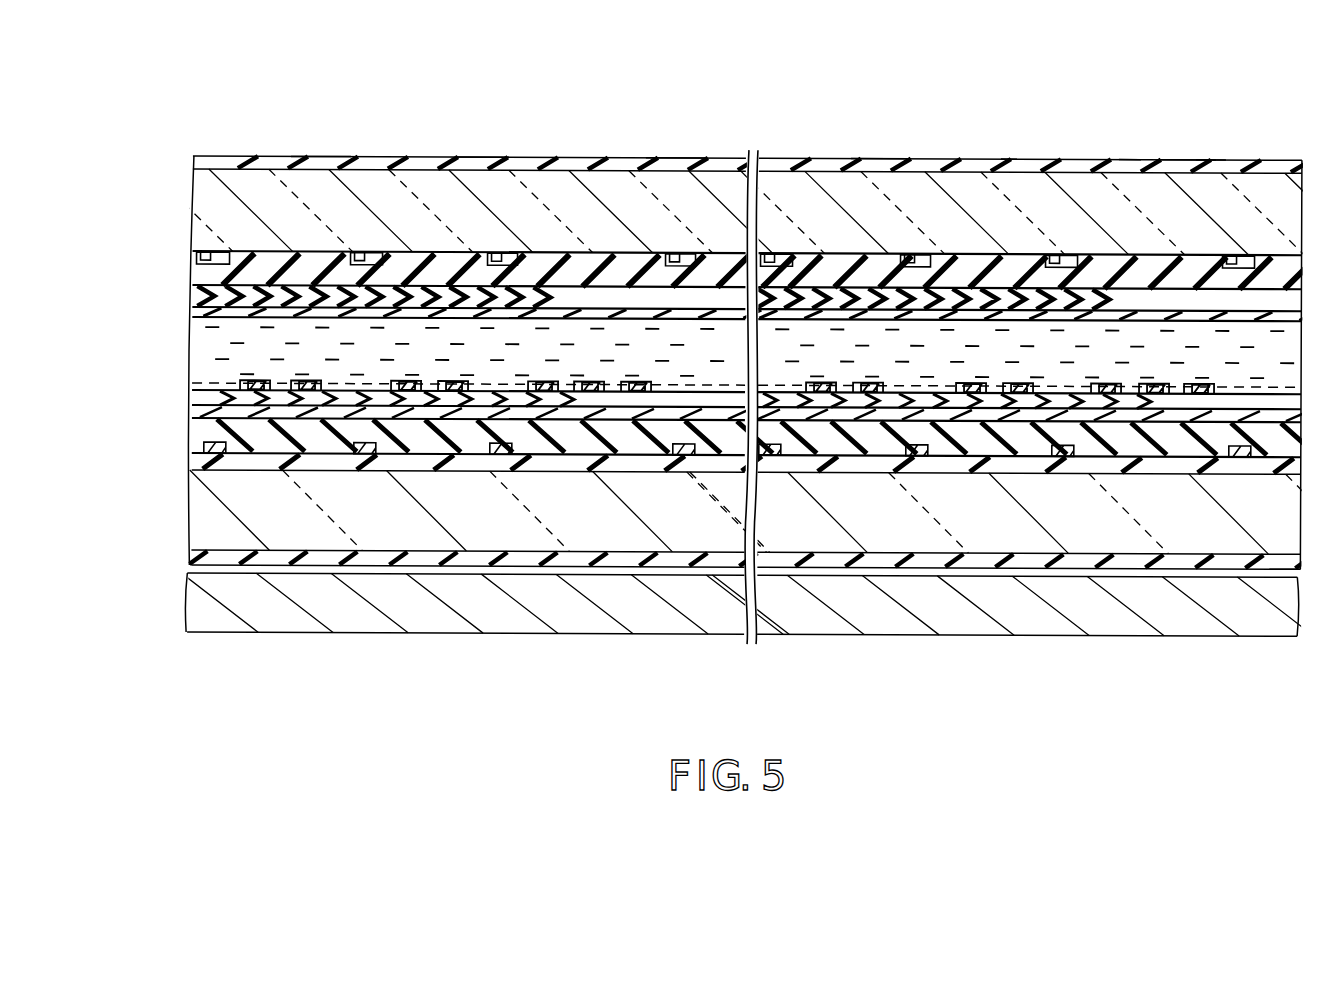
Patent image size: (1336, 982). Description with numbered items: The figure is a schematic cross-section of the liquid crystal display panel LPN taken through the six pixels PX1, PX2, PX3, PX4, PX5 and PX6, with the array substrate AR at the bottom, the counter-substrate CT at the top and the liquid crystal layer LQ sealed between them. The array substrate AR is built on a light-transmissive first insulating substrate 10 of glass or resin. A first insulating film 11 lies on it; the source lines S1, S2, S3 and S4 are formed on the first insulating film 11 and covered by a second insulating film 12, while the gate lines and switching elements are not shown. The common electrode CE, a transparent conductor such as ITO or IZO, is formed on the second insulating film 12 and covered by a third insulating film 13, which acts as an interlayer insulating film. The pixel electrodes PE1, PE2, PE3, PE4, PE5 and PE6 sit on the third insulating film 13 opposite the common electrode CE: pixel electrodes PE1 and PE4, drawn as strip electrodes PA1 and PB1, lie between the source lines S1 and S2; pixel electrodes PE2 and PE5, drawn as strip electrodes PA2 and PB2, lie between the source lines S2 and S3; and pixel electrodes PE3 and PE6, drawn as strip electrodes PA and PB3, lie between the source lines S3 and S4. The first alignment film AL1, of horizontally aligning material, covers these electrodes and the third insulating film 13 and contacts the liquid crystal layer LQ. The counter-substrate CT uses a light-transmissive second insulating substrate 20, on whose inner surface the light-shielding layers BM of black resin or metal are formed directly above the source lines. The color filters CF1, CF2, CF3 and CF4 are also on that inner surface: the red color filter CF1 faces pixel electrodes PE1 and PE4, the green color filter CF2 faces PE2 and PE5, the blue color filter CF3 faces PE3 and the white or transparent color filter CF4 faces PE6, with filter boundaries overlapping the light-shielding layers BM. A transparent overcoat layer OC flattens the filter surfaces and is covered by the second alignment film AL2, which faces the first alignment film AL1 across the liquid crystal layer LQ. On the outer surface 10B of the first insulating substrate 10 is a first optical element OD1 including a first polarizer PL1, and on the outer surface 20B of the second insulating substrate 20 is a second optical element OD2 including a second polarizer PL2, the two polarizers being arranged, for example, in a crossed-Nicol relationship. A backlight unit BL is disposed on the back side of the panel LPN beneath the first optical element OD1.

The pixel PX1 is at (320, 157).
The pixel PX2 is at (483, 157).
The pixel PX3 is at (676, 157).
The pixel PX4 is at (880, 157).
The pixel PX5 is at (1030, 157).
The pixel PX6 is at (1187, 157).
The outer surface of second insulating substrate 20B is at (1128, 157).
The liquid crystal display panel LPN is at (1210, 153).
The light-shielding layer BM is at (214, 252).
The color filter CF1 is at (262, 262).
The color filter CF2 is at (424, 262).
The color filter CF3 is at (610, 262).
The color filter CF4 is at (1150, 262).
The second optical element OD2 is at (689, 159).
The second polarizer PL2 is at (774, 164).
The second insulating substrate 20 is at (192, 200).
The counter-substrate CT is at (701, 214).
The overcoat layer OC is at (192, 296).
The second alignment film AL2 is at (192, 312).
The liquid crystal layer LQ is at (192, 346).
The first alignment film AL1 is at (192, 388).
The third insulating film 13 is at (192, 398).
The common electrode CE is at (192, 412).
The second insulating film 12 is at (192, 436).
The first insulating film 11 is at (192, 462).
The array substrate AR is at (702, 535).
The first insulating substrate 10 is at (192, 520).
The outer surface of first insulating substrate 10B is at (1282, 558).
The first optical element OD1 is at (690, 556).
The first polarizer PL1 is at (192, 558).
The backlight unit BL is at (192, 606).
The source line S1 is at (215, 455).
The source line S2 is at (365, 455).
The source line S3 is at (501, 455).
The source line S4 is at (684, 455).
The strip electrode PA1 is at (280, 546).
The pixel electrode PE1 is at (306, 392).
The strip electrode PA2 is at (429, 547).
The pixel electrode PE2 is at (453, 392).
The strip electrode PA is at (589, 547).
The pixel electrode PE3 is at (636, 392).
The strip electrode PB1 is at (844, 548).
The pixel electrode PE4 is at (868, 392).
The strip electrode PB2 is at (994, 549).
The pixel electrode PE5 is at (1018, 392).
The strip electrode PB3 is at (1152, 549).
The pixel electrode PE6 is at (1199, 392).